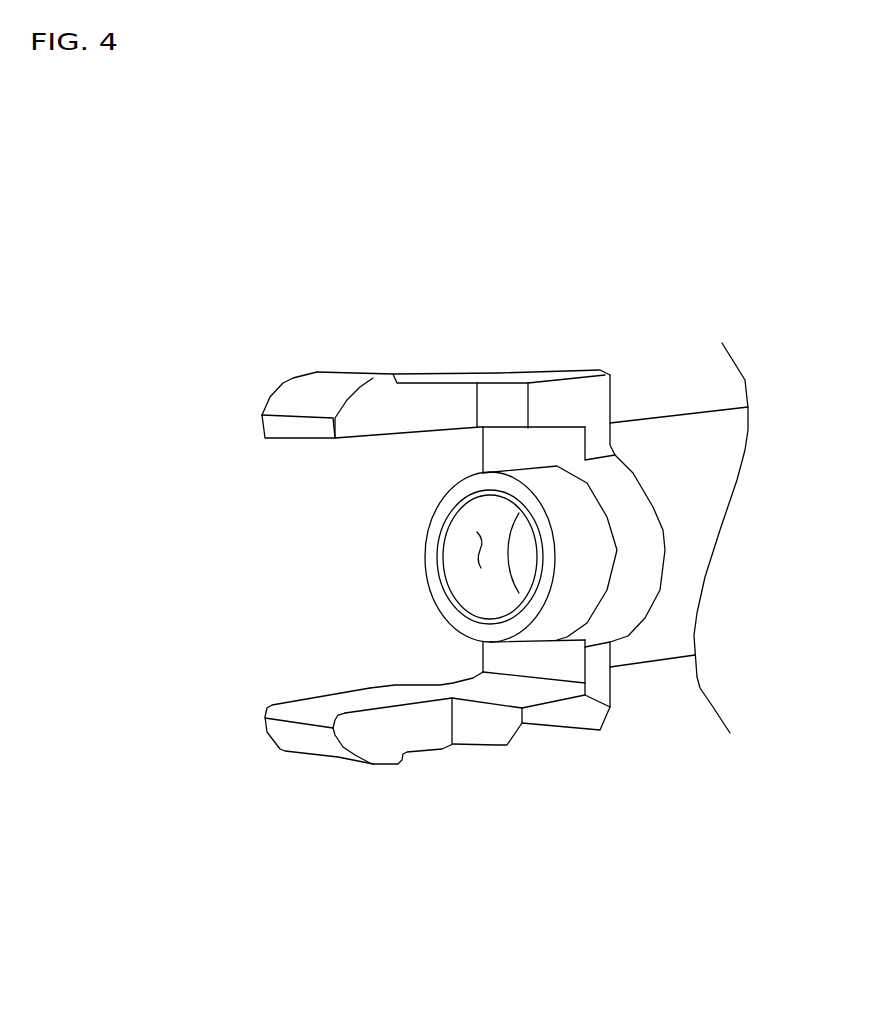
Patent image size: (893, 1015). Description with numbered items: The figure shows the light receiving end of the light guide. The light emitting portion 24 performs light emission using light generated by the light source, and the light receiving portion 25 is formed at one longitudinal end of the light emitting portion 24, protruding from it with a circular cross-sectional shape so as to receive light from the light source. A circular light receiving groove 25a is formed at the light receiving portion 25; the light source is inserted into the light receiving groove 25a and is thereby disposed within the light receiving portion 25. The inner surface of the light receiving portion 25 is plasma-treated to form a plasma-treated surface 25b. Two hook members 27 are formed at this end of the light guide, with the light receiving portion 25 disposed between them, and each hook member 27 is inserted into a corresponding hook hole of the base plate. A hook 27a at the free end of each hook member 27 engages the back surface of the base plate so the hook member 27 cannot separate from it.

The light emitting portion 24 is at (666, 489).
The light receiving portion 25 is at (405, 554).
The light receiving groove 25a is at (327, 551).
The plasma-treated surface 25b is at (347, 563).
The hook member 27 is at (463, 572).
The hook 27a is at (337, 574).